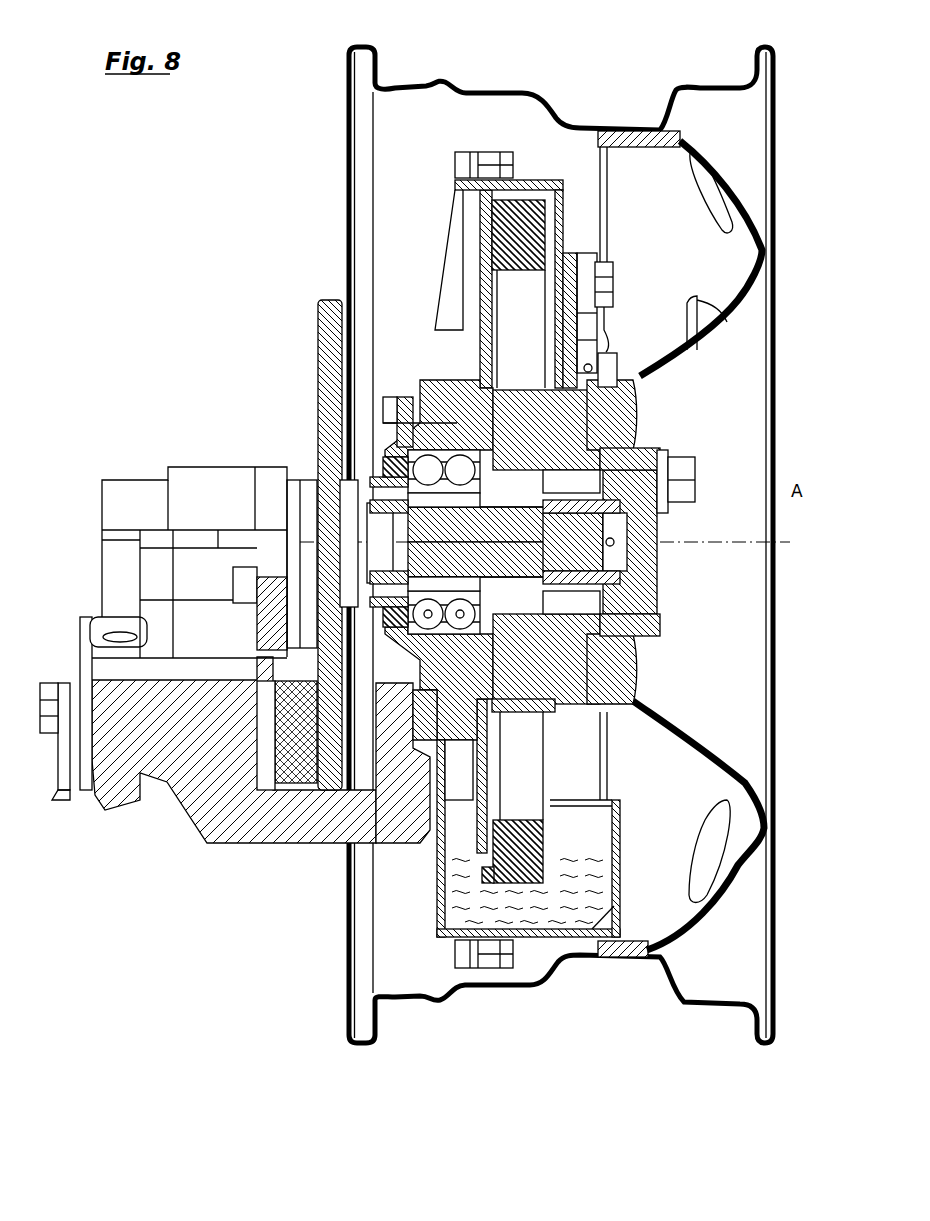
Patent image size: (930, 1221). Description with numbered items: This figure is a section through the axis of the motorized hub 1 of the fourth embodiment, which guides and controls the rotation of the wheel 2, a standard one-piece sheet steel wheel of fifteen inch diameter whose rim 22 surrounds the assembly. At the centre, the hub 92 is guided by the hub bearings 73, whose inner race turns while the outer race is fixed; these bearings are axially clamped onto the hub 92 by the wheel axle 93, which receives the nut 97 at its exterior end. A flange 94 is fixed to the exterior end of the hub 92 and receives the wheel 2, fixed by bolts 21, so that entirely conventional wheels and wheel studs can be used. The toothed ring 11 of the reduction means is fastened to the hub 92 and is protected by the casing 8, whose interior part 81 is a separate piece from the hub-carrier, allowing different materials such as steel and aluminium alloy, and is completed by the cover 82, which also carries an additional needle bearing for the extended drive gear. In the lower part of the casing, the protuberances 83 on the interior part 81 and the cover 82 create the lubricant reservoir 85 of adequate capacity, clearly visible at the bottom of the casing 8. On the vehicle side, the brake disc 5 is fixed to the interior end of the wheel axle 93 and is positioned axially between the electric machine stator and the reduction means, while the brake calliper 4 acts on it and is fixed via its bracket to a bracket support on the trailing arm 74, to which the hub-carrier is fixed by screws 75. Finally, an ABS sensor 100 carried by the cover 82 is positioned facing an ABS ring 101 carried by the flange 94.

The motorized hub 1 is at (286, 128).
The wheel 2 is at (402, 1006).
The brake calliper 4 is at (214, 800).
The brake disc 5 is at (325, 345).
The casing 8 is at (570, 46).
The toothed ring 11 is at (525, 238).
The bolts 21 is at (690, 478).
The rim 22 is at (638, 989).
The hub bearings 73 is at (460, 470).
The trailing arm 74 is at (213, 495).
The screws 75 is at (385, 423).
The interior part of the casing 81 is at (460, 330).
The cover 82 is at (532, 180).
The protuberances 83 is at (438, 876).
The lubricant reservoir 85 is at (470, 915).
The hub 92 is at (590, 640).
The wheel axle 93 is at (575, 560).
The flange 94 is at (620, 415).
The nut 97 is at (590, 507).
The ABS sensor 100 is at (612, 315).
The ABS ring 101 is at (625, 355).